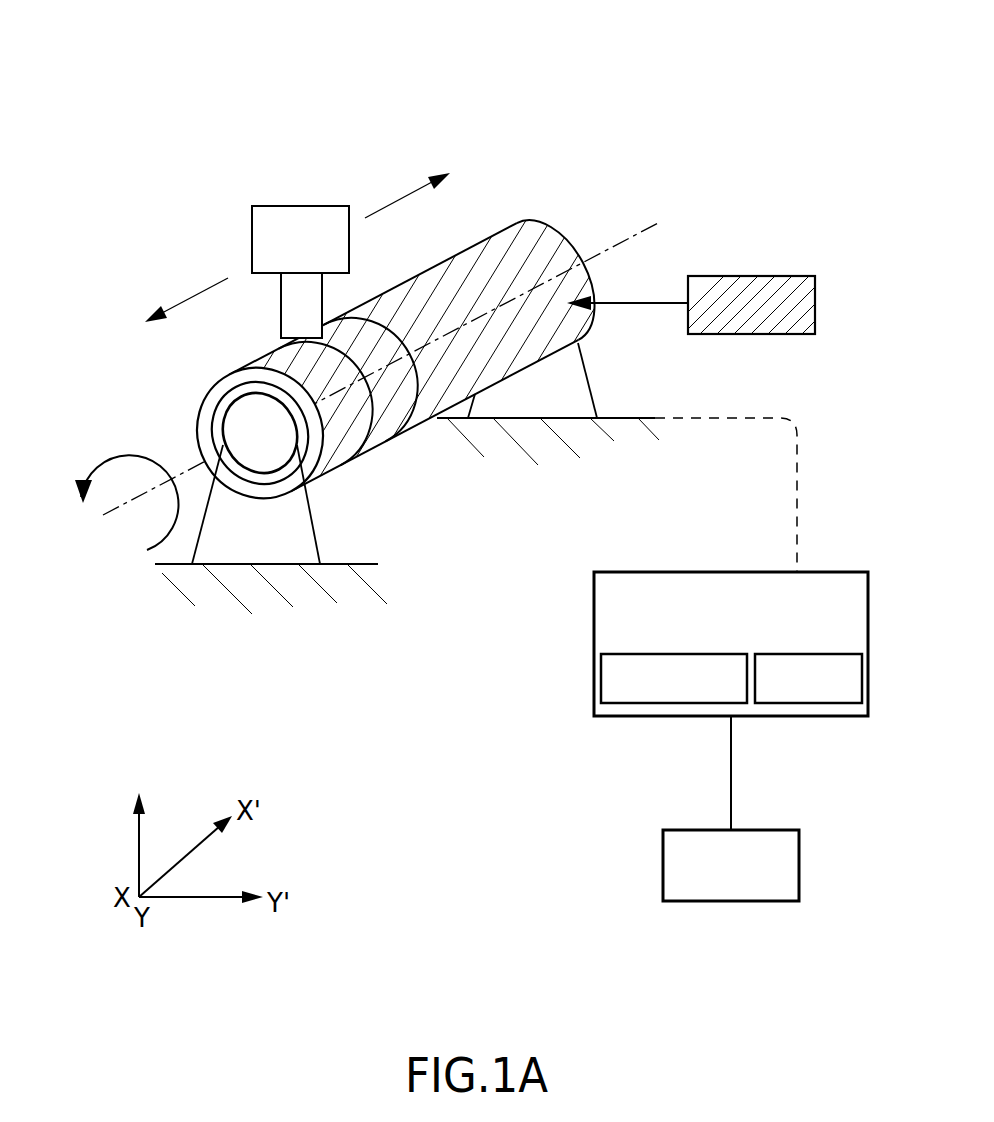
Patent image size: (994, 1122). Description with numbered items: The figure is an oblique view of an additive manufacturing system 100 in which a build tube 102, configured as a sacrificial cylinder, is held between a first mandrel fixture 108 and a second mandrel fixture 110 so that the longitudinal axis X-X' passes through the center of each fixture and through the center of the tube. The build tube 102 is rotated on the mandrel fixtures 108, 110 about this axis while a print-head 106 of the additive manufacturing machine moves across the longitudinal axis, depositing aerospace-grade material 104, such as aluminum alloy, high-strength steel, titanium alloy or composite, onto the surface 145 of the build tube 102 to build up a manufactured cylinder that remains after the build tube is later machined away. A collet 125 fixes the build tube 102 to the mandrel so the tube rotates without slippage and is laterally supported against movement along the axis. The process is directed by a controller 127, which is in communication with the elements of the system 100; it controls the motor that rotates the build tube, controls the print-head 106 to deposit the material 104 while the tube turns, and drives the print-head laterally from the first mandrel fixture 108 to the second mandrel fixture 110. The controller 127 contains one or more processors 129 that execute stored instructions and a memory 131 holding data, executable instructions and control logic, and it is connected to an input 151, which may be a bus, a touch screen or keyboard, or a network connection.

The additive manufacturing system 100 is at (418, 104).
The build tube 102 is at (200, 423).
The aerospace-grade material 104 is at (790, 336).
The print-head 106 is at (281, 293).
The first mandrel fixture 108 is at (593, 394).
The second mandrel fixture 110 is at (315, 540).
The collet 125 is at (388, 350).
The surface 145 is at (525, 257).
The controller 127 is at (750, 637).
The processor 129 is at (672, 704).
The memory 131 is at (807, 704).
The input 151 is at (750, 888).